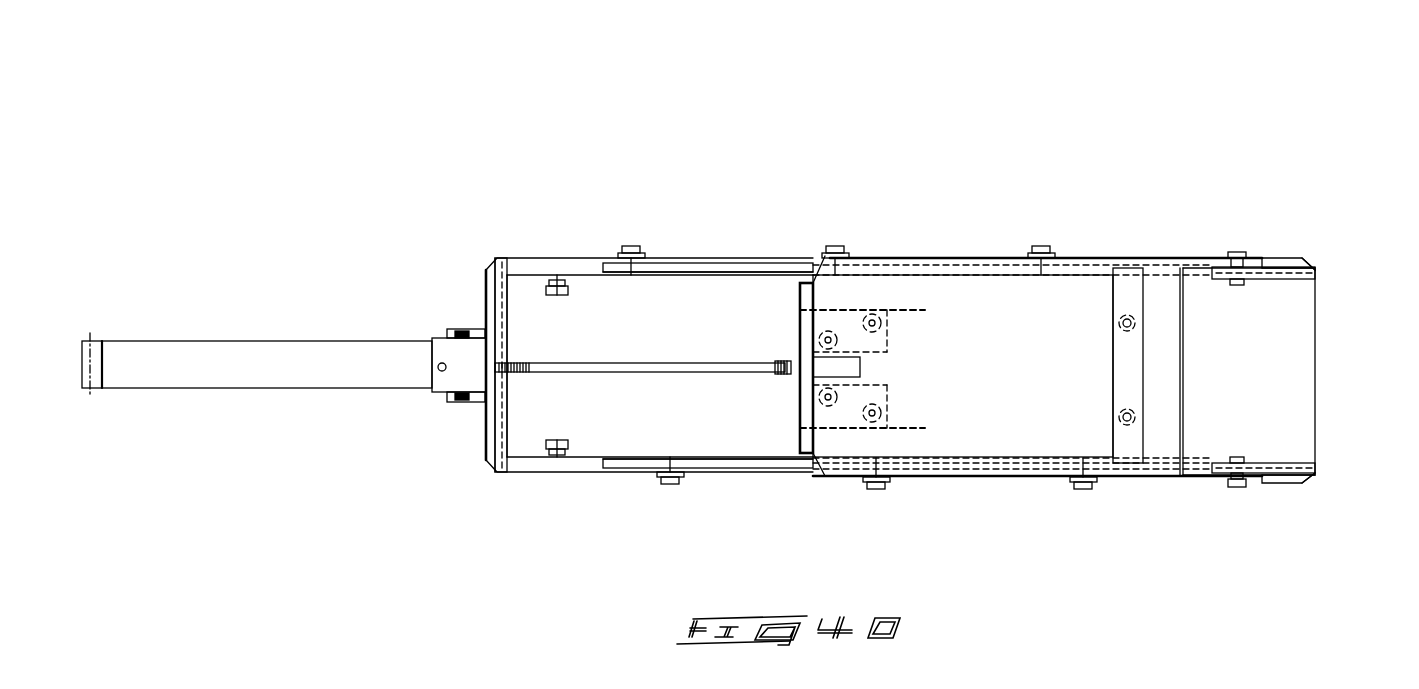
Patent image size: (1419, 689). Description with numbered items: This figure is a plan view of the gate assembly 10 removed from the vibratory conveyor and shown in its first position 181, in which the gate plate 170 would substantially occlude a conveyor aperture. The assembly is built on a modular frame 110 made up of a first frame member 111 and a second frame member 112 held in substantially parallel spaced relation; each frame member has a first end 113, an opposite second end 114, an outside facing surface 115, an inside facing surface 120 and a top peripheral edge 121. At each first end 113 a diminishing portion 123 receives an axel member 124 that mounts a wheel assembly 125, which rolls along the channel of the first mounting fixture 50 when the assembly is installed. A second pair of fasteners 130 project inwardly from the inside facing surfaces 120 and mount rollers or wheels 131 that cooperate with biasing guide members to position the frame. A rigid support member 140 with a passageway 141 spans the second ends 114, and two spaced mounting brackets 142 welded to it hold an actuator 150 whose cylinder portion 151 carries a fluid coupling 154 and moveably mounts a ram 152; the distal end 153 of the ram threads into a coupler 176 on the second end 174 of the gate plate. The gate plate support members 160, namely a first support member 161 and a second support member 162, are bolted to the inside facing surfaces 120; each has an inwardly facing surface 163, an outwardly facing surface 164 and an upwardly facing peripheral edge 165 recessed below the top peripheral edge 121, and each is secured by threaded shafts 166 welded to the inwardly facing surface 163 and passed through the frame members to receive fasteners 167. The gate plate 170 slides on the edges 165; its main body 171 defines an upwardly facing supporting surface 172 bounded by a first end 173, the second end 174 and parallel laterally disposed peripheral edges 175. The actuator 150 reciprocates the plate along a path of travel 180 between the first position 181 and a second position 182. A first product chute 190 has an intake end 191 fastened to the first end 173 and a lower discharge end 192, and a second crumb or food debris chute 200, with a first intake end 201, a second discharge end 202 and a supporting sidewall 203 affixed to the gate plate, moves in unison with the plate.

The gate assembly 10 is at (903, 157).
The first mounting fixture 50 is at (1285, 258).
The modular frame 110 is at (627, 367).
The first frame member 111 is at (567, 257).
The second frame member 112 is at (600, 474).
The first end 113 is at (1258, 260).
The second end 114 is at (515, 258).
The outside facing surface 115 is at (756, 264).
The inside facing surface 120 is at (606, 265).
The top peripheral edge 121 is at (725, 257).
The diminishing portion 123 is at (1216, 258).
The axel member 124 is at (1240, 284).
The wheel assembly 125 is at (1223, 286).
The second pair of fasteners 130 is at (558, 294).
The rollers or wheels 131 is at (561, 366).
The rigid support member 140 is at (485, 289).
The passageway 141 is at (503, 346).
The mounting brackets 142 is at (486, 333).
The actuator 150 is at (284, 331).
The cylinder portion 151 is at (225, 357).
The ram 152 is at (712, 372).
The distal end 153 is at (786, 375).
The fluid coupling 154 is at (437, 368).
The gate plate support members 160 is at (660, 397).
The first support member 161 is at (748, 276).
The second support member 162 is at (772, 457).
The inwardly facing surface 163 is at (660, 300).
The outwardly facing surface 164 is at (738, 288).
The upwardly facing peripheral edge 165 is at (727, 284).
The threaded shafts 166 is at (630, 245).
The fasteners 167 is at (645, 250).
The gate plate 170 is at (1006, 363).
The main body 171 is at (1012, 367).
The upwardly facing supporting surface 172 is at (1005, 430).
The first end 173 is at (1106, 292).
The second end 174 is at (827, 320).
The laterally disposed peripheral edges 175 is at (988, 266).
The coupler 176 is at (895, 335).
The path of travel 180 is at (681, 356).
The first position 181 is at (1045, 320).
The second position 182 is at (530, 385).
The first product chute 190 is at (1284, 371).
The intake end 191 is at (1120, 360).
The discharge end 192 is at (1316, 310).
The second crumb or food debris chute 200 is at (1040, 482).
The first intake end 201 is at (880, 260).
The second discharge end 202 is at (1318, 418).
The supporting sidewall 203 is at (1316, 260).